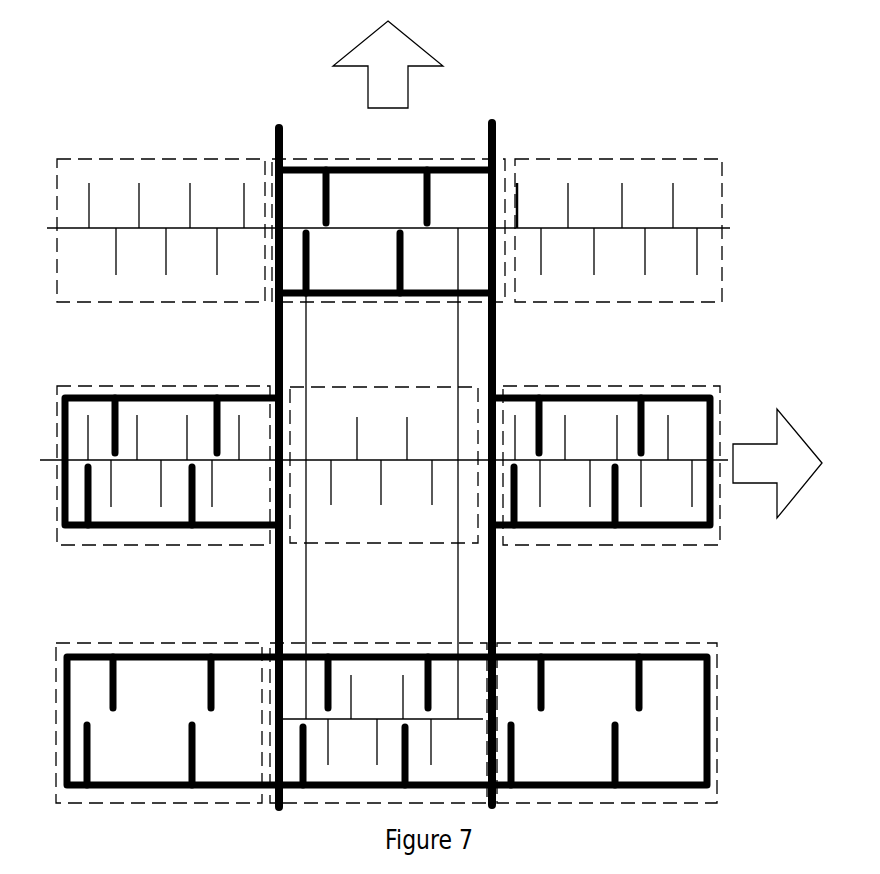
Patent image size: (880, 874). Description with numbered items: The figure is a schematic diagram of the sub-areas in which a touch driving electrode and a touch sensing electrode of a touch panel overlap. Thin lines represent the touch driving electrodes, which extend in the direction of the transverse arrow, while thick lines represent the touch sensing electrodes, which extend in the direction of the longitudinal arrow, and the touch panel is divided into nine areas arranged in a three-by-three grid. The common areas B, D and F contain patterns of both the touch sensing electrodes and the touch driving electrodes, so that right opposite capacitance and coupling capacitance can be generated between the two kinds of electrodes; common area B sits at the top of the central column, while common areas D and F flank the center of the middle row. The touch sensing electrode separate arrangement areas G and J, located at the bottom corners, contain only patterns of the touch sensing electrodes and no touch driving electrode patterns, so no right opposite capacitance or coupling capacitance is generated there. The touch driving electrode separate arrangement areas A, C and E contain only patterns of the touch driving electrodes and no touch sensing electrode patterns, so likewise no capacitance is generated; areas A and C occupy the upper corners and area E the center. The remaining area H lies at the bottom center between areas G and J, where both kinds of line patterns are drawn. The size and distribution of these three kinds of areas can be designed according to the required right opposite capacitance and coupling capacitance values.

The touch driving electrode separate arrangement area A is at (161, 230).
The common area B is at (388, 230).
The touch driving electrode separate arrangement area C is at (618, 230).
The common area D is at (168, 465).
The touch driving electrode separate arrangement area E is at (384, 465).
The common area F is at (606, 465).
The touch sensing electrode separate arrangement area G is at (167, 723).
The module H is at (381, 723).
The touch sensing electrode separate arrangement area J is at (604, 723).